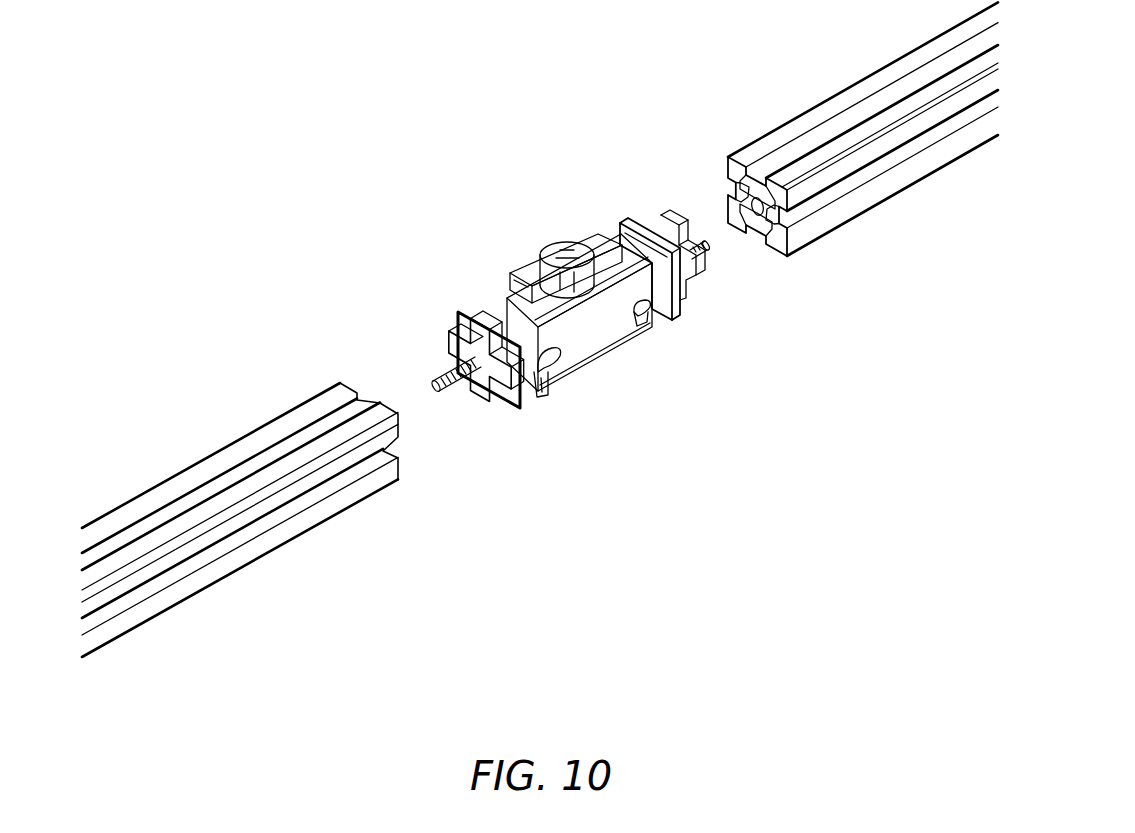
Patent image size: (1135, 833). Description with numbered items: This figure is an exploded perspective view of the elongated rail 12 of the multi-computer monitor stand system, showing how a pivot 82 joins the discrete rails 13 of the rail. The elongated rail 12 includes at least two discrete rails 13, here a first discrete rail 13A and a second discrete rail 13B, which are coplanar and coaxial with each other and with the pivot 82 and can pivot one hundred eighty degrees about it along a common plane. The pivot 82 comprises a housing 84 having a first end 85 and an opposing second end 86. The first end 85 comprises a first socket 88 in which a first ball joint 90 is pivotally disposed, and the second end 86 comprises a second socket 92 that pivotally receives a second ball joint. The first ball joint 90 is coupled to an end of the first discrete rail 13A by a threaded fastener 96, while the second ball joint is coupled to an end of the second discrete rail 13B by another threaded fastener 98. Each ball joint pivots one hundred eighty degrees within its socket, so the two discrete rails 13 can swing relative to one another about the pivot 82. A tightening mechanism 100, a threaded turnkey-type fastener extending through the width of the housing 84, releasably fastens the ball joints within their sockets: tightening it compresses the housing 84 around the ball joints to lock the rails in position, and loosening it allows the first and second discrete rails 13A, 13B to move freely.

The elongated rail 12 is at (553, 130).
The discrete rails 13 is at (540, 331).
The first discrete rail 13A is at (240, 570).
The second discrete rail 13B is at (838, 228).
The pivot 82 is at (604, 424).
The housing 84 is at (600, 343).
The first end 85 is at (537, 388).
The second end 86 is at (658, 326).
The first socket 88 is at (552, 362).
The first ball joint 90 is at (500, 308).
The second socket 92 is at (648, 312).
The threaded fastener 96 is at (431, 378).
The threaded fastener 98 is at (700, 232).
The tightening mechanism 100 is at (577, 247).